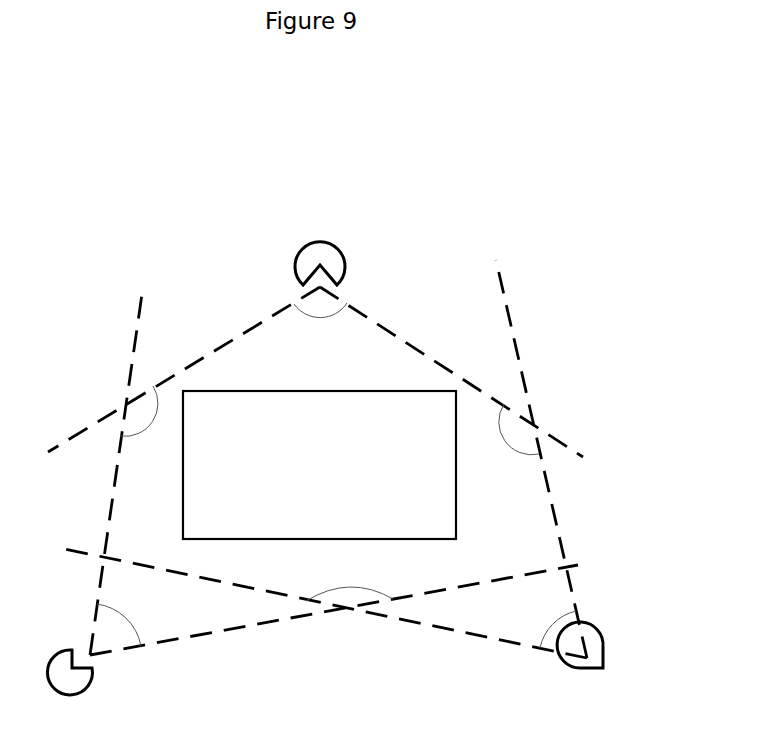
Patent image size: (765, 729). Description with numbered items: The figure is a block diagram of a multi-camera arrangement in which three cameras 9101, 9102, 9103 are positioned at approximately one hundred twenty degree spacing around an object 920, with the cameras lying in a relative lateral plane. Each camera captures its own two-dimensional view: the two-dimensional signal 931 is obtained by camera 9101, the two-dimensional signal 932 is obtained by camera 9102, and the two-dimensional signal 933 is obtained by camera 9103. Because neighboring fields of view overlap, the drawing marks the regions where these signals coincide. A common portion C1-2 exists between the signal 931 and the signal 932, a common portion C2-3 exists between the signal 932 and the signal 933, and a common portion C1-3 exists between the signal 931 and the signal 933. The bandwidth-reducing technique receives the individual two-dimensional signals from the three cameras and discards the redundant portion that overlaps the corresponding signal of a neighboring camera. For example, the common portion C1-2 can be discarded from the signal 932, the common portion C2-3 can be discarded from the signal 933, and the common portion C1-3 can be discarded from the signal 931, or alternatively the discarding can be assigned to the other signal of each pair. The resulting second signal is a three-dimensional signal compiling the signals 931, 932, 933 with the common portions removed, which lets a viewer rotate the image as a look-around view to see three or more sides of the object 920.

The camera 9101 is at (300, 254).
The camera 9102 is at (617, 683).
The camera 9103 is at (93, 687).
The object 920 is at (319, 465).
The 2-D signal 931 is at (328, 318).
The 2-D signal 932 is at (542, 636).
The 2-D signal 933 is at (140, 636).
The common portion C1-3 is at (153, 418).
The common portion C1-2 is at (515, 447).
The common portion C2-3 is at (329, 592).